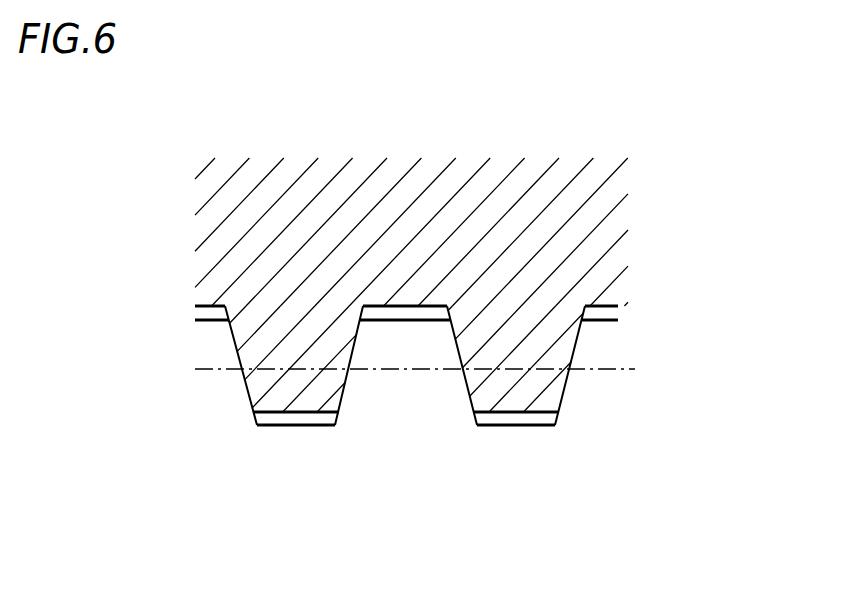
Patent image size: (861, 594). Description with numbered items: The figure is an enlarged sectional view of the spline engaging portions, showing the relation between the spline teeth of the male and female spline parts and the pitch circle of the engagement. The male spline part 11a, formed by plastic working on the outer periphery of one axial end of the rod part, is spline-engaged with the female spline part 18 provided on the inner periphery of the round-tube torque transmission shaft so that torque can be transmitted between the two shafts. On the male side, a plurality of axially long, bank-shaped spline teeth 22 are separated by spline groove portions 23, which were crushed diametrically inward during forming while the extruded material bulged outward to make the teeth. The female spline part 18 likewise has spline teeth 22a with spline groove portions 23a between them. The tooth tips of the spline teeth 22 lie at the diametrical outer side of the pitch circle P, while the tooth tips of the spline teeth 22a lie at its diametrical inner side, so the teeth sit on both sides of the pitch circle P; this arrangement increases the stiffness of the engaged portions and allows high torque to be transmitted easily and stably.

The female spline part 18 is at (605, 308).
The spline tooth 22 is at (403, 270).
The spline tooth 22a is at (257, 396).
The spline groove portion 23 is at (287, 424).
The spline groove portion 23a is at (415, 303).
The male spline part 11a is at (197, 318).
The pitch circle P is at (645, 368).